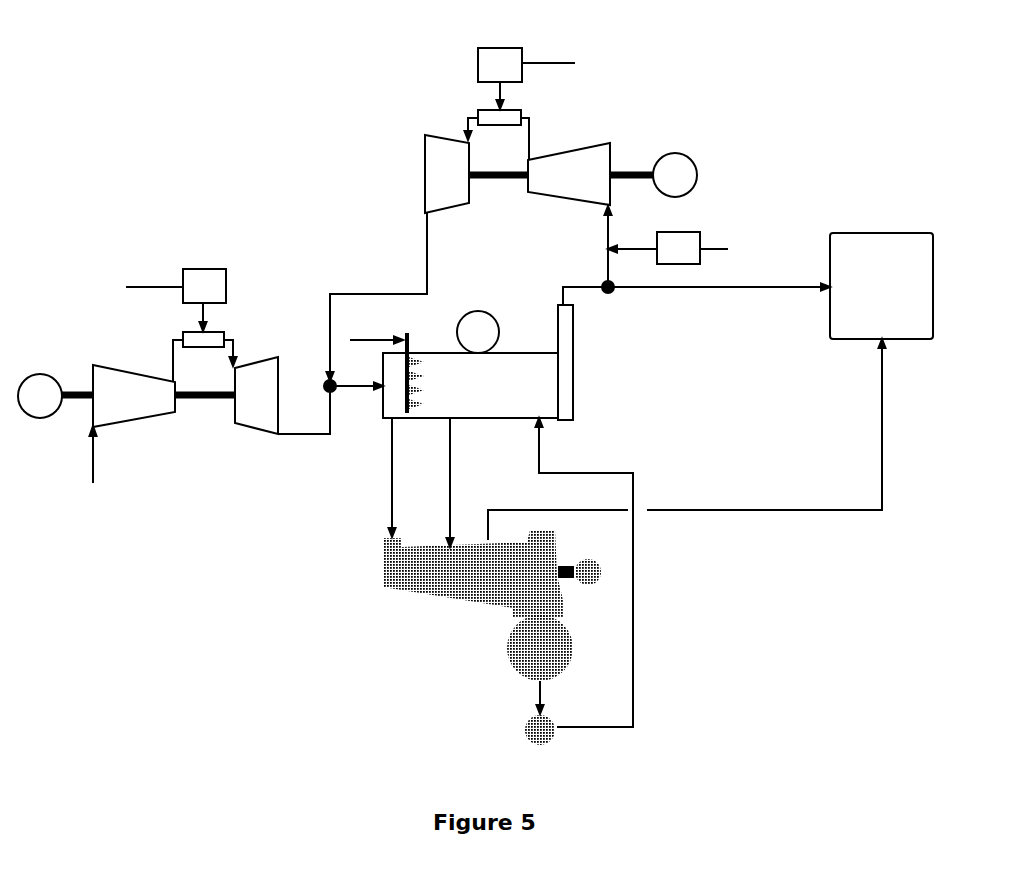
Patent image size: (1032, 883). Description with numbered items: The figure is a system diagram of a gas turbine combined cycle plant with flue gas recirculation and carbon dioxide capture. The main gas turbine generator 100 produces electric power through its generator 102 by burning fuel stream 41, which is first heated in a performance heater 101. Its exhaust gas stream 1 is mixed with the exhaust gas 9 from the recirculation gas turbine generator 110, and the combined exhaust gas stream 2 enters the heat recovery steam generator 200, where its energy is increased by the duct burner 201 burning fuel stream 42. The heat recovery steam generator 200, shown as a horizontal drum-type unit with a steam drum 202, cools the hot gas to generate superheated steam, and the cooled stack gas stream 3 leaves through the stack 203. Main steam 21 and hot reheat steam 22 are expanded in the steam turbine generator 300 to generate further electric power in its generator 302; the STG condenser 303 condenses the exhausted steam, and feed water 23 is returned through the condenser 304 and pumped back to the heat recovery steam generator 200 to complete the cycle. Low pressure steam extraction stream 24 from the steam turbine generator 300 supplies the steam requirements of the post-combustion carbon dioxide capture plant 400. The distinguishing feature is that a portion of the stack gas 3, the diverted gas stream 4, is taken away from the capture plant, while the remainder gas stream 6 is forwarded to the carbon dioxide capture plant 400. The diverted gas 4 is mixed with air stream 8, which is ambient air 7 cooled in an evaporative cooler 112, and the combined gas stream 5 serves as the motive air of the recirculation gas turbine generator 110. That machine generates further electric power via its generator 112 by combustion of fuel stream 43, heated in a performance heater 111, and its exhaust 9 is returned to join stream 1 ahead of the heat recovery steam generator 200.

The exhaust gas stream 1 is at (307, 421).
The combined exhaust gas stream 2 is at (359, 398).
The stack gas stream 3 is at (574, 291).
The diverted gas stream 4 is at (603, 268).
The combined gas stream 5 is at (605, 232).
The remainder gas stream 6 is at (719, 298).
The ambient air 7 is at (725, 249).
The air stream 8 is at (632, 239).
The exhaust gas 9 is at (377, 297).
The main steam 21 is at (377, 477).
The hot reheat steam 22 is at (436, 482).
The feed water 23 is at (585, 572).
The low pressure steam extraction stream 24 is at (687, 439).
The fuel stream 41 is at (137, 287).
The fuel stream 42 is at (376, 330).
The fuel stream 43 is at (565, 63).
The main gas turbine generator 100 is at (170, 407).
The performance heater 101 is at (204, 286).
The generator 102 is at (40, 380).
The recirculation gas turbine generator 110 is at (539, 172).
The performance heater 111 is at (500, 64).
The generator / evaporative cooler 112 is at (690, 198).
The heat recovery steam generator 200 is at (470, 405).
The duct burner 201 is at (433, 373).
The steam drum 202 is at (473, 320).
The stack 203 is at (586, 362).
The steam turbine generator 300 is at (473, 585).
The generator 302 is at (584, 561).
The STG condenser 303 is at (540, 648).
The condenser 304 is at (517, 713).
The post-combustion carbon dioxide capture plant 400 is at (881, 286).